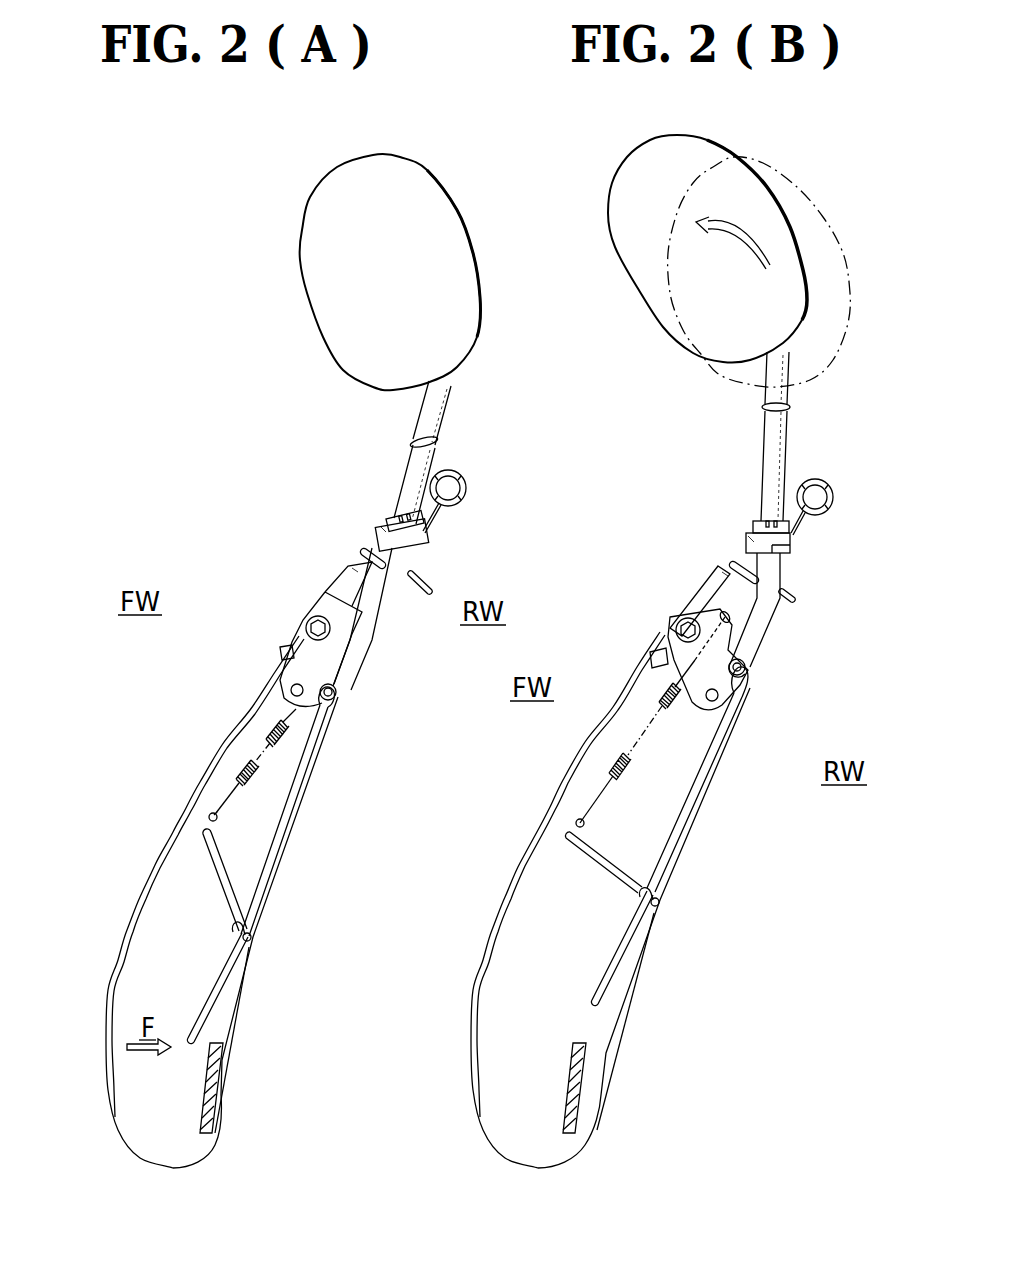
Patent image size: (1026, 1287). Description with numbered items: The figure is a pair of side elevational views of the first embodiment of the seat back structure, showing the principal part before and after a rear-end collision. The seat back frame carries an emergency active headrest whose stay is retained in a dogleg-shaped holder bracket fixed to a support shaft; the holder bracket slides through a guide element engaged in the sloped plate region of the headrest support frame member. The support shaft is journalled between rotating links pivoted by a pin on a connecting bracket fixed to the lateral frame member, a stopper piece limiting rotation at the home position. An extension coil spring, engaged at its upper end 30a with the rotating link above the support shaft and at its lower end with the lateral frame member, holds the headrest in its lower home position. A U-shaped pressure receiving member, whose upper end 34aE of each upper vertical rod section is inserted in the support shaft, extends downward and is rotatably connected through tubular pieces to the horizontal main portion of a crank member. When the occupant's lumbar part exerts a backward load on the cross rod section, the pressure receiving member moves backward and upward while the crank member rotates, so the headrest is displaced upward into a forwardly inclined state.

The upper end 30a is at (745, 615).
The upper end 34aE is at (335, 712).